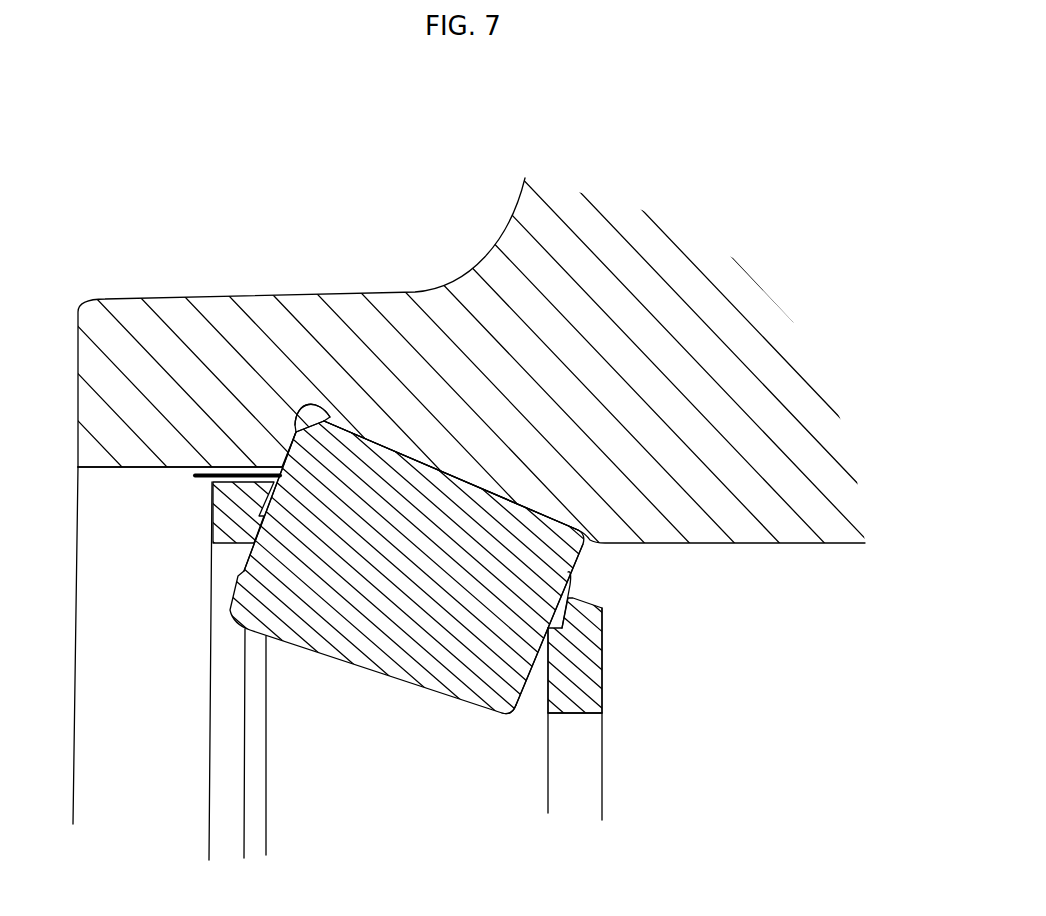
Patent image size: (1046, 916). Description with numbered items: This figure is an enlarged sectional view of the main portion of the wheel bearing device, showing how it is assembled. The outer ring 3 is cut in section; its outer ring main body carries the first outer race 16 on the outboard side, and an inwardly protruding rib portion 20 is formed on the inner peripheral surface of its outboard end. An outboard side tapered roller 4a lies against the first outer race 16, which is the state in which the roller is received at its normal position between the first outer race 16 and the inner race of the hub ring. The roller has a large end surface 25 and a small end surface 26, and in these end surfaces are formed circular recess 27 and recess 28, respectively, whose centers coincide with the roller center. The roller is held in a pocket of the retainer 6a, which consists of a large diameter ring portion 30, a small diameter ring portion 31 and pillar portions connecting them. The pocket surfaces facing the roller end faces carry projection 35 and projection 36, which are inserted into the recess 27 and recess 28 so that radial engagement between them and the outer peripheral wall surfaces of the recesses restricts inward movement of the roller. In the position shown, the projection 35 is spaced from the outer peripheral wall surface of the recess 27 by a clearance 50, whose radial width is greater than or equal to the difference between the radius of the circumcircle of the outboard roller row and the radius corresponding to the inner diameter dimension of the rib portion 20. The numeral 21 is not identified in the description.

The outer ring 3 is at (482, 252).
The first outer race 16 is at (410, 460).
The outboard side tapered roller 4a is at (392, 680).
The clearance 50 is at (194, 477).
The large end surface 25 is at (243, 575).
The recess 28 is at (572, 578).
The large diameter ring portion 30 is at (212, 757).
The small diameter ring portion 31 is at (603, 768).
The retainer 6a is at (604, 713).
The recess 27 is at (275, 436).
The rib portion 20 is at (297, 437).
The roller chamfer 21 is at (290, 452).
The projection 35 is at (296, 562).
The projection 36 is at (536, 641).
The small end surface 26 is at (531, 706).